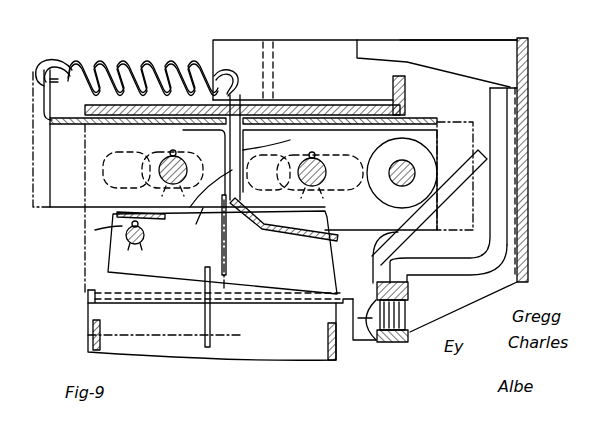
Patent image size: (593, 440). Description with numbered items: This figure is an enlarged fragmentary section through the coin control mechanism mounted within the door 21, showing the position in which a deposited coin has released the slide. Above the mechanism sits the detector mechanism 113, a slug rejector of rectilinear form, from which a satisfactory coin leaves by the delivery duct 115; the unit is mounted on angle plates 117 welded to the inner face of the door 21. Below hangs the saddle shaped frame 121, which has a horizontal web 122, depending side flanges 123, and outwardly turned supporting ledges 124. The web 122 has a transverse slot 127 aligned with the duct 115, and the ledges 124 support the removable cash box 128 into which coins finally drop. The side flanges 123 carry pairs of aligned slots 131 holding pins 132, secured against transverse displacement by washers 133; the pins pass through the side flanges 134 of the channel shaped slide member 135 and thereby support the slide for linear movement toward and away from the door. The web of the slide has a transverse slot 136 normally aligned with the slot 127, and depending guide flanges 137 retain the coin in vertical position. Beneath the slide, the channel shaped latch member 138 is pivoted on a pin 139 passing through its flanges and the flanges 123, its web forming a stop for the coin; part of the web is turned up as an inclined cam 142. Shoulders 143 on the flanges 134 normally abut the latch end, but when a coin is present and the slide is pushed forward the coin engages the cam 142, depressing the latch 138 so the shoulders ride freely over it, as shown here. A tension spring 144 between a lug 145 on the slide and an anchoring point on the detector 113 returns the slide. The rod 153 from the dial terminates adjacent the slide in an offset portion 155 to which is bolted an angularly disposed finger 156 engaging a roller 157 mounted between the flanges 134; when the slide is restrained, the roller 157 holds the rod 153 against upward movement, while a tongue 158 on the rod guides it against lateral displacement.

The door 21 is at (530, 46).
The detector mechanism 113 is at (320, 45).
The delivery duct 115 is at (262, 45).
The angle plates 117 is at (478, 45).
The saddle shaped frame 121 is at (86, 268).
The horizontal web 122 is at (355, 92).
The side flanges 123 is at (95, 230).
The supporting ledges 124 is at (80, 297).
The transverse slot 127 is at (272, 107).
The cash box 128 is at (292, 358).
The aligned slots 131 is at (134, 152).
The pins 132 is at (168, 157).
The washers 133 is at (135, 190).
The side flanges of slide member 134 is at (68, 205).
The slide member 135 is at (430, 122).
The transverse slot 136 is at (231, 76).
The guide flanges 137 is at (282, 138).
The latch member 138 is at (222, 252).
The pin 139 is at (122, 237).
The inclined cam 142 is at (228, 220).
The shoulders 143 is at (338, 240).
The tension spring 144 is at (143, 62).
The lug 145 is at (44, 64).
The rod 153 is at (500, 115).
The offset portion 155 is at (448, 268).
The finger 156 is at (450, 205).
The roller 157 is at (424, 150).
The tongue 158 is at (405, 343).